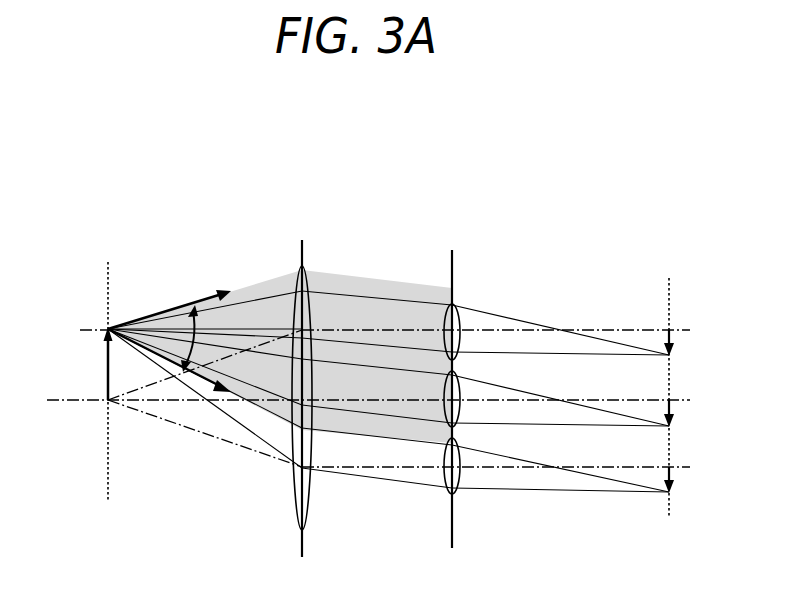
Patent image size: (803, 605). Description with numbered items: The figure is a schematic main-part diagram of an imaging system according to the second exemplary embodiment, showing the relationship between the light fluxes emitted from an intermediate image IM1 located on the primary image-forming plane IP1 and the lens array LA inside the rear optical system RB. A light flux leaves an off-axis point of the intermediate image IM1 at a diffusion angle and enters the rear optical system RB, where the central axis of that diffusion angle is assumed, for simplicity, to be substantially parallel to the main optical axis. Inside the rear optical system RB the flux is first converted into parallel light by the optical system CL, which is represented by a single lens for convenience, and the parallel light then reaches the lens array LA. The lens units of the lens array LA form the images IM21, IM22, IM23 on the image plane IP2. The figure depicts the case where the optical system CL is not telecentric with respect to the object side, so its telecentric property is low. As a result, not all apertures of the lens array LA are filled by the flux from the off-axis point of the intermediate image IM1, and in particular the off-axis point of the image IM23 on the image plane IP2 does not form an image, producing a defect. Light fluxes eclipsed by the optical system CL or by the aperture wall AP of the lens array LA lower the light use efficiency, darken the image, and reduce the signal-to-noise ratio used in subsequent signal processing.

The primary image-forming plane IP1 is at (124, 208).
The intermediate image IM1 is at (105, 378).
The rear optical system RB is at (545, 156).
The optical system CL is at (311, 211).
The lens array LA is at (462, 211).
The aperture wall AP is at (450, 267).
The image plane IP2 is at (686, 207).
The image IM21 is at (683, 333).
The image IM22 is at (683, 403).
The image IM23 is at (683, 472).